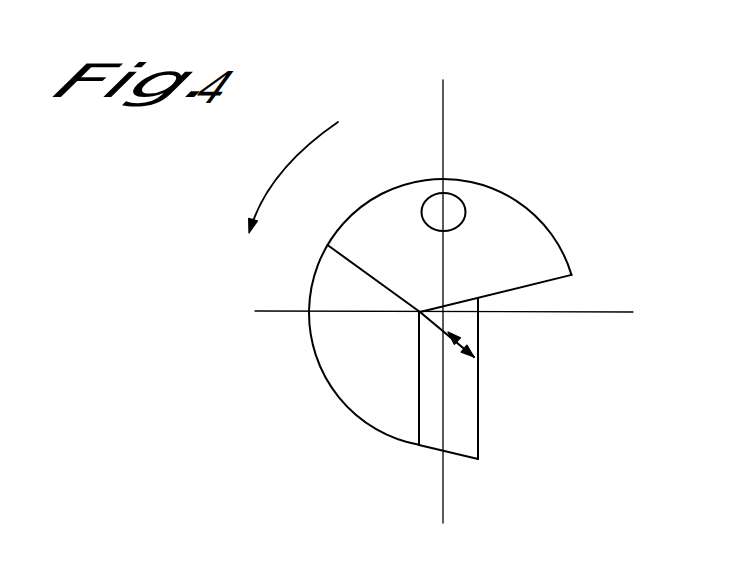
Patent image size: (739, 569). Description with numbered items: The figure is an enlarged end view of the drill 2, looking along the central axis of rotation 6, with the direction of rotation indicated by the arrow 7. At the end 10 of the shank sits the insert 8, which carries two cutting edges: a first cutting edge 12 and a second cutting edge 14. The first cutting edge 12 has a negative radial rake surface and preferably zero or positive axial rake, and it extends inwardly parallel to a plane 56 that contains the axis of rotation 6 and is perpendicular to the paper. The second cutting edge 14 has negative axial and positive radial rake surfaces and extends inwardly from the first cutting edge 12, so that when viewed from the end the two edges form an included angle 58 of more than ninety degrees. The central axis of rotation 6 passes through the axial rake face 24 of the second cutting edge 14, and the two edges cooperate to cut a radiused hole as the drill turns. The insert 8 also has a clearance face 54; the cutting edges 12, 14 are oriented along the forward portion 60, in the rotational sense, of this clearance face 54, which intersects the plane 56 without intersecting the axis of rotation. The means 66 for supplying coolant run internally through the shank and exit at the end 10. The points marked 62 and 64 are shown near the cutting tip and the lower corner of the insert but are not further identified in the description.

The drill 2 is at (558, 110).
The central axis of rotation 6 is at (443, 322).
The arrow 7 is at (293, 177).
The insert 8 is at (428, 367).
The end of the shank 10 is at (410, 177).
The first cutting edge 12 is at (480, 368).
The second cutting edge 14 is at (447, 330).
The axial rake face 24 is at (452, 320).
The clearance face 54 is at (462, 412).
The plane 56 is at (441, 478).
The included angle 58 is at (450, 341).
The forward portion 60 is at (528, 446).
The centre line 62 is at (442, 325).
The corner 64 is at (436, 453).
The means for supplying coolant 66 is at (455, 206).